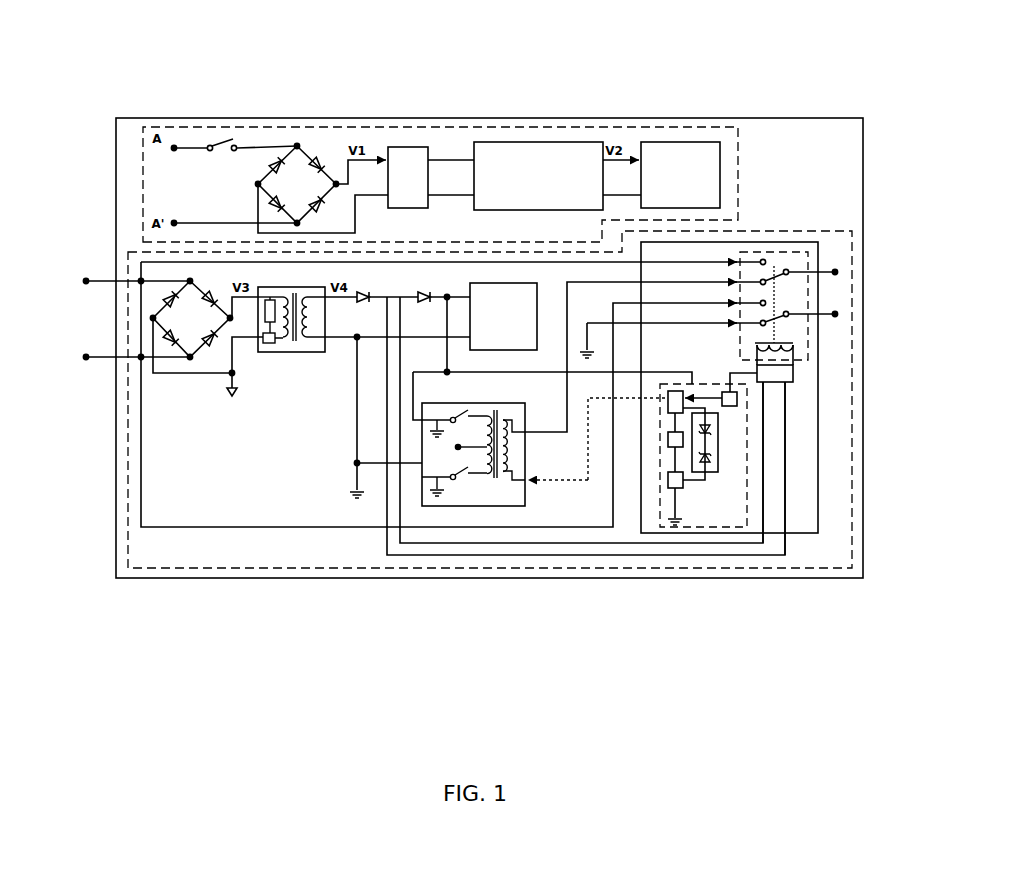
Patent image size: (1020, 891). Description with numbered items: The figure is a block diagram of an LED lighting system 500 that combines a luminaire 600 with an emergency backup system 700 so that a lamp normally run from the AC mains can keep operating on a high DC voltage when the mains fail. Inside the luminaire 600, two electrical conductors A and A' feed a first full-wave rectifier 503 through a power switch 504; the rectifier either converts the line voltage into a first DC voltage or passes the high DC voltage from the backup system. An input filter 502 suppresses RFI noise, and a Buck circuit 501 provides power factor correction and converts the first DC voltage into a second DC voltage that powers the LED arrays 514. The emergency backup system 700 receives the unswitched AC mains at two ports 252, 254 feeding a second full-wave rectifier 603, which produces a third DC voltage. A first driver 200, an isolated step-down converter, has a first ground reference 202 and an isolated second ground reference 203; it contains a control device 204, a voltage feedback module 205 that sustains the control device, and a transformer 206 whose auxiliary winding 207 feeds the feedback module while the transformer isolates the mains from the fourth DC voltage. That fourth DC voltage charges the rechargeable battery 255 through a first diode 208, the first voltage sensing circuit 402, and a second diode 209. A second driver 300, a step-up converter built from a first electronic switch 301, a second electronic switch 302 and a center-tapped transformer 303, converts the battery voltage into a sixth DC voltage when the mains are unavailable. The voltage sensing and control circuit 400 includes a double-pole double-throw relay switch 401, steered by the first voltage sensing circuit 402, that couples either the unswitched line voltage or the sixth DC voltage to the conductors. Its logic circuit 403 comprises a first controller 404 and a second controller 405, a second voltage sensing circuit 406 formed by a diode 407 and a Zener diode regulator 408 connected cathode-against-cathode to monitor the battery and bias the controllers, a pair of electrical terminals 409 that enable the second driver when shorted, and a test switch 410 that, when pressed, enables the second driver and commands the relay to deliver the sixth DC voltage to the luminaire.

The LED lighting system 500 is at (689, 116).
The power switch 504 is at (222, 144).
The first full-wave rectifier 503 is at (291, 140).
The input filter 502 is at (405, 146).
The luminaire 600 is at (483, 125).
The Buck circuit 501 is at (540, 141).
The LED arrays 514 is at (722, 172).
The port 252 is at (86, 279).
The port 254 is at (86, 360).
The second full-wave rectifier 603 is at (196, 364).
The first ground reference 202 is at (230, 400).
The first driver 200 is at (287, 388).
The control device 204 is at (260, 354).
The voltage feedback module 205 is at (270, 354).
The auxiliary winding 207 is at (289, 354).
The transformer 206 is at (308, 354).
The first diode 208 is at (366, 304).
The second diode 209 is at (420, 293).
The second ground reference 203 is at (352, 498).
The rechargeable battery 255 is at (470, 283).
The second driver 300 is at (461, 510).
The first electronic switch 301 is at (466, 410).
The second electronic switch 302 is at (460, 483).
The center-tapped transformer 303 is at (492, 487).
The voltage sensing and control circuit 400 is at (736, 516).
The first controller 404 is at (668, 411).
The pair of electrical terminals 409 is at (668, 446).
The second controller 405 is at (672, 491).
The second voltage sensing circuit 406 is at (798, 517).
The diode 407 is at (708, 438).
The Zener diode regulator 408 is at (712, 463).
The test switch 410 is at (737, 406).
The relay switch 401 is at (773, 379).
The first voltage sensing circuit 402 is at (795, 381).
The logic circuit 403 is at (750, 526).
The emergency backup system 700 is at (296, 570).